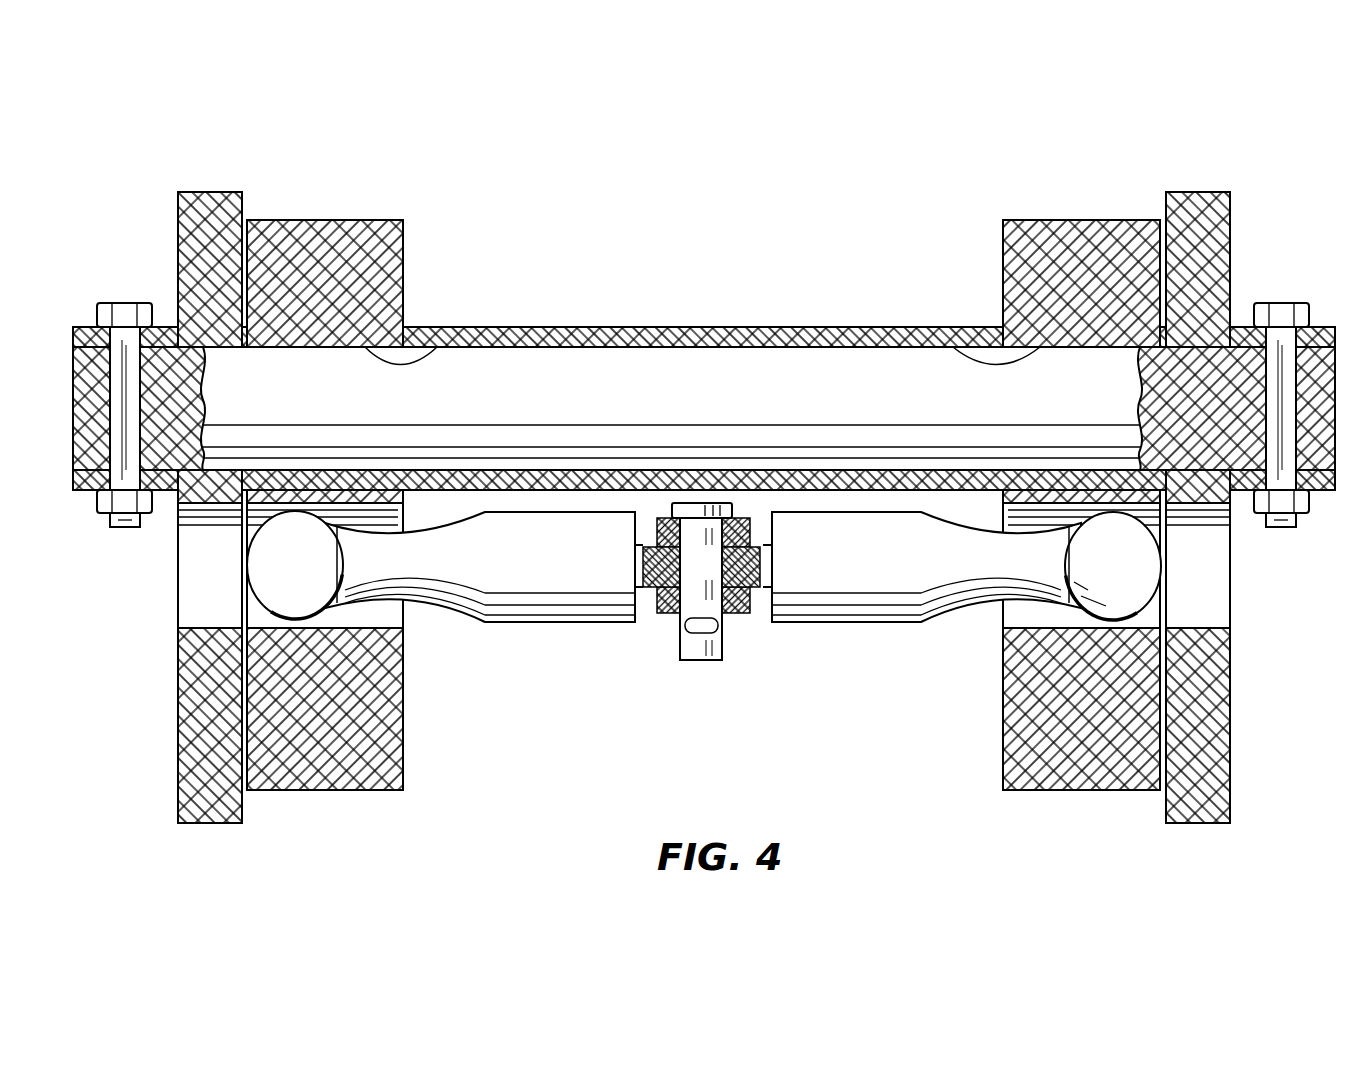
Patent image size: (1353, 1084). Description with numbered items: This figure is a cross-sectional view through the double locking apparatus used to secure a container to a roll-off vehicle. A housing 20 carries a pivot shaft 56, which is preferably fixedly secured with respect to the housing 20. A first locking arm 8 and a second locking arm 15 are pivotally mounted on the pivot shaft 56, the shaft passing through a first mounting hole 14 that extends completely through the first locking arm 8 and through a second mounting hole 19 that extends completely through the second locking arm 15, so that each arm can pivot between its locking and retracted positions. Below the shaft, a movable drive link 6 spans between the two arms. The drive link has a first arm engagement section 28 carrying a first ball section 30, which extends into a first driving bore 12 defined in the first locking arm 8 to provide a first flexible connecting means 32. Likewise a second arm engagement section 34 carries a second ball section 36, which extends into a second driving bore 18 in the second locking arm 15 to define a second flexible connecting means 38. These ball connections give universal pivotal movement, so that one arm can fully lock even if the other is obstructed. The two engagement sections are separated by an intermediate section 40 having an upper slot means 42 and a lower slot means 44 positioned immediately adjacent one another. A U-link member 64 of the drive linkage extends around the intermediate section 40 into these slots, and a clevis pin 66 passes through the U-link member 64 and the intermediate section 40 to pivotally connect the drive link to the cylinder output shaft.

The movable drive link 6 is at (856, 587).
The first locking arm 8 is at (348, 225).
The first driving bore 12 is at (388, 612).
The first mounting hole 14 is at (437, 347).
The second locking arm 15 is at (1066, 244).
The second driving bore 18 is at (1010, 613).
The second mounting hole 19 is at (945, 347).
The housing 20 is at (188, 224).
The first arm engagement section 28 is at (357, 555).
The first ball section 30 is at (278, 573).
The first flexible connecting means 32 is at (336, 606).
The second arm engagement section 34 is at (988, 555).
The second ball section 36 is at (1090, 576).
The second flexible connecting means 38 is at (1065, 610).
The intermediate section 40 is at (645, 605).
The upper slot means 42 is at (643, 520).
The lower slot means 44 is at (733, 605).
The pivot shaft 56 is at (488, 396).
The U-link member 64 is at (660, 520).
The clevis pin 66 is at (687, 575).